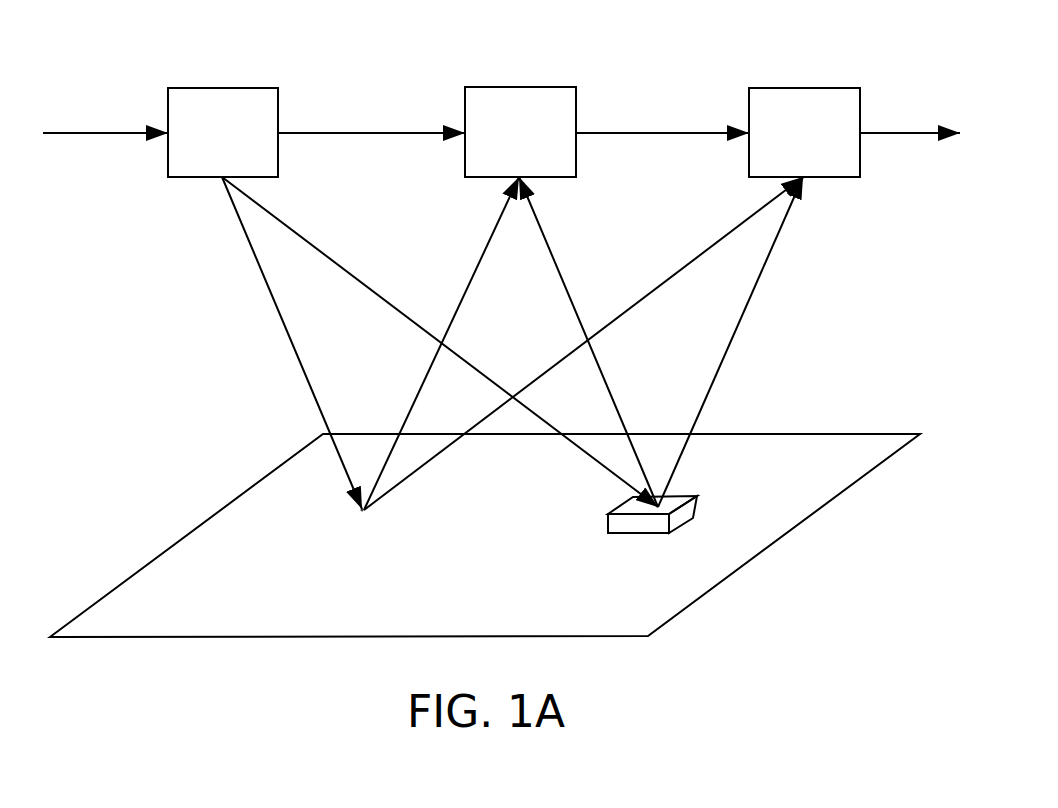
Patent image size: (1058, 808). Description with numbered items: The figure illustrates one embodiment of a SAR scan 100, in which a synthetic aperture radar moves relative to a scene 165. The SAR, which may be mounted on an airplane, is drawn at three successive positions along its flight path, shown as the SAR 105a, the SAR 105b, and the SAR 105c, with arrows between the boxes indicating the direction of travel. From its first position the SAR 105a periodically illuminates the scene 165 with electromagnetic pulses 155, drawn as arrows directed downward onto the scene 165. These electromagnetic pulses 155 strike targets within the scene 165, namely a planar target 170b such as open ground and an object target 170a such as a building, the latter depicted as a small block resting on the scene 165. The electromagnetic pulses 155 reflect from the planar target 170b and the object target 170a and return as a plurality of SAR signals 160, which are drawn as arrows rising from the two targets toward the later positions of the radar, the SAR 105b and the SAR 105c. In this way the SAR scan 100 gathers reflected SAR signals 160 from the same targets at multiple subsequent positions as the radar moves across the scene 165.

The SAR scan 100 is at (116, 66).
The SAR 105a is at (223, 132).
The SAR 105b is at (520, 132).
The SAR 105c is at (804, 132).
The electromagnetic pulses 155 is at (380, 295).
The SAR signals 160 is at (483, 255).
The scene 165 is at (187, 563).
The object target 170a is at (678, 498).
The planar target 170b is at (362, 513).